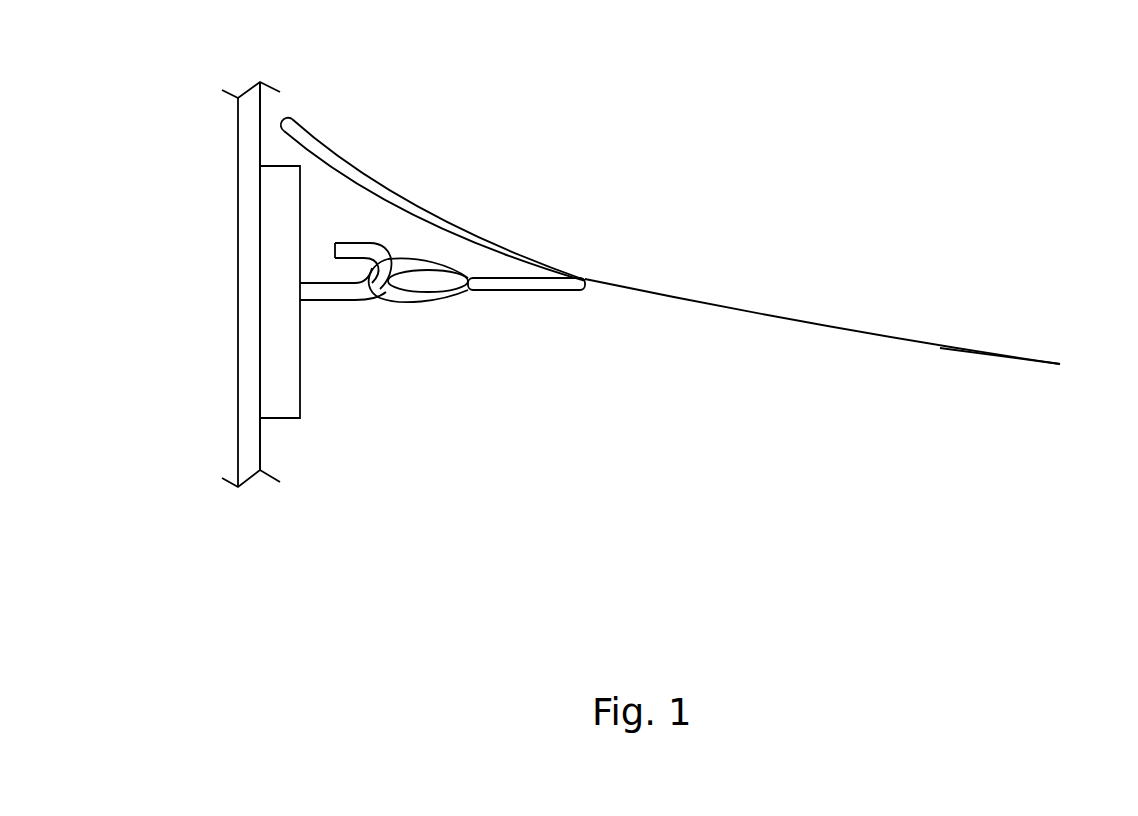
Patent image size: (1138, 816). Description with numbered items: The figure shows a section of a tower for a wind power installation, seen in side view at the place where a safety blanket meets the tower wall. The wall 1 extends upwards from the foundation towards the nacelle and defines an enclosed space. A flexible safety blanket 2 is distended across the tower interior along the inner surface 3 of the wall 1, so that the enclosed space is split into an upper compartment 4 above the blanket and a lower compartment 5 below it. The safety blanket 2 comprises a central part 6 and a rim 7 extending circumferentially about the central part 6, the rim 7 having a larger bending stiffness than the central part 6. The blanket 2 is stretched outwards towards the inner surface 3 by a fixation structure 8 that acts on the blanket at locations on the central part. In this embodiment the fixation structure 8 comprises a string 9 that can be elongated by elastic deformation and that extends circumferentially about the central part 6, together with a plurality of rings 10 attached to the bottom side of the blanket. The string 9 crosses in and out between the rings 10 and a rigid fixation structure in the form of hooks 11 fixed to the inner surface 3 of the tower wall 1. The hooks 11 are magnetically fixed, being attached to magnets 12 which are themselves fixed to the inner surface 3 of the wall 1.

The wall 1 is at (248, 188).
The safety blanket 2 is at (742, 295).
The inner surface 3 is at (268, 449).
The upper compartment 4 is at (861, 106).
The lower compartment 5 is at (812, 488).
The central part 6 is at (960, 352).
The rim 7 is at (316, 153).
The fixation structure 8 is at (457, 354).
The string 9 is at (418, 300).
The rings 10 is at (548, 283).
The hooks 11 is at (322, 300).
The magnets 12 is at (278, 356).